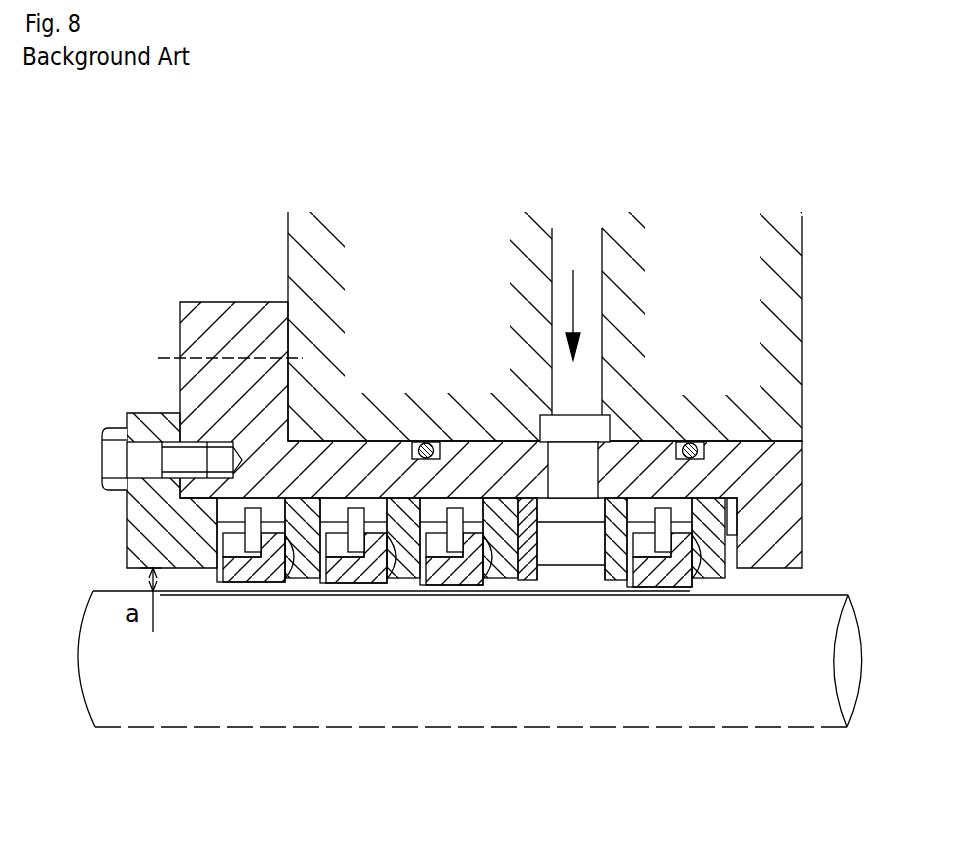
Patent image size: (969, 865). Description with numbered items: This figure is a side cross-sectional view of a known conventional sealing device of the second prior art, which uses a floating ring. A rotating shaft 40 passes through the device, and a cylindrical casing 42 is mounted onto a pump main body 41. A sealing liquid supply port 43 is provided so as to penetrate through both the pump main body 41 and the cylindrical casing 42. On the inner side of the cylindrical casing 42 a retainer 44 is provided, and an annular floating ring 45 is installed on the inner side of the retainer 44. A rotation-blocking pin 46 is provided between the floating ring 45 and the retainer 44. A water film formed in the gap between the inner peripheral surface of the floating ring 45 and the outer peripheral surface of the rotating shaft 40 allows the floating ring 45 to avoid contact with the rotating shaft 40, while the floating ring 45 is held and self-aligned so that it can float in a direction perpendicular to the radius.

The rotating shaft 40 is at (815, 714).
The pump main body 41 is at (470, 274).
The cylindrical casing 42 is at (210, 300).
The sealing liquid supply port 43 is at (583, 472).
The retainer 44 is at (320, 515).
The floating ring 45 is at (363, 595).
The rotation-blocking pin 46 is at (337, 591).